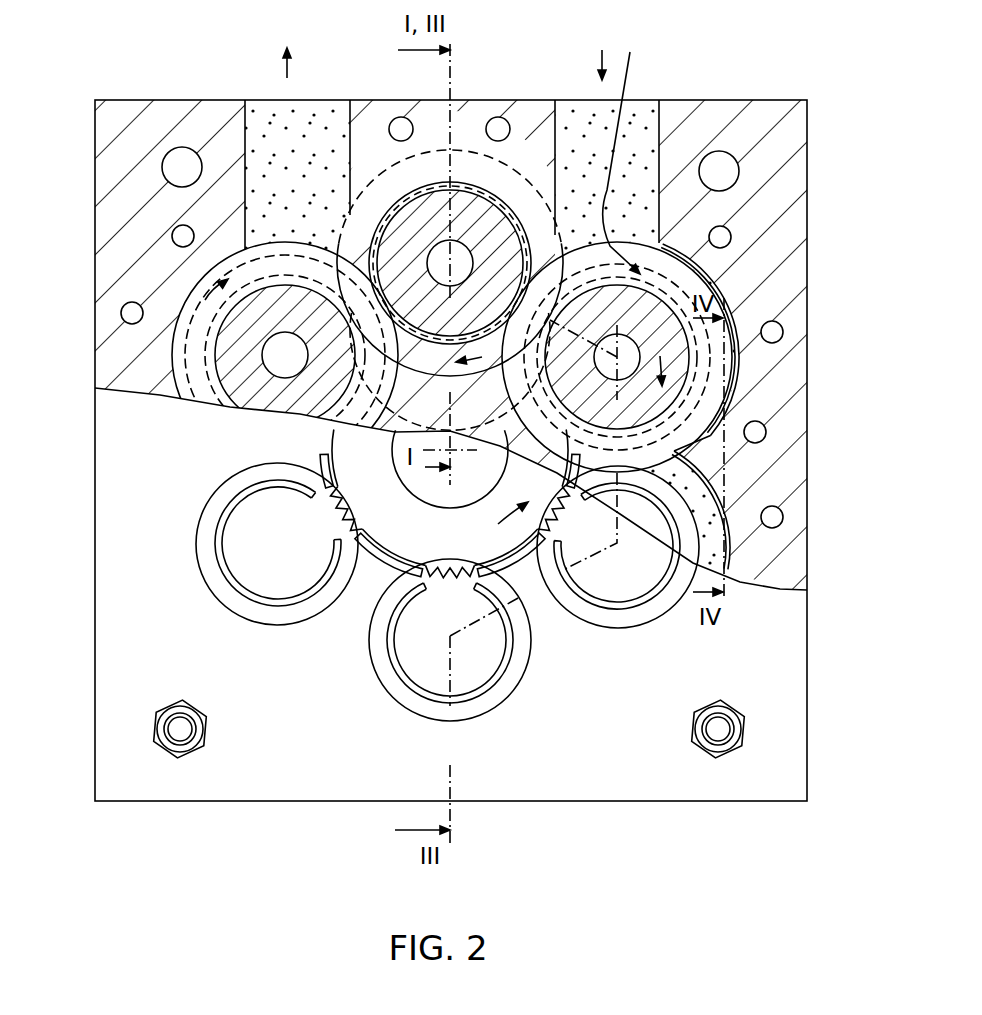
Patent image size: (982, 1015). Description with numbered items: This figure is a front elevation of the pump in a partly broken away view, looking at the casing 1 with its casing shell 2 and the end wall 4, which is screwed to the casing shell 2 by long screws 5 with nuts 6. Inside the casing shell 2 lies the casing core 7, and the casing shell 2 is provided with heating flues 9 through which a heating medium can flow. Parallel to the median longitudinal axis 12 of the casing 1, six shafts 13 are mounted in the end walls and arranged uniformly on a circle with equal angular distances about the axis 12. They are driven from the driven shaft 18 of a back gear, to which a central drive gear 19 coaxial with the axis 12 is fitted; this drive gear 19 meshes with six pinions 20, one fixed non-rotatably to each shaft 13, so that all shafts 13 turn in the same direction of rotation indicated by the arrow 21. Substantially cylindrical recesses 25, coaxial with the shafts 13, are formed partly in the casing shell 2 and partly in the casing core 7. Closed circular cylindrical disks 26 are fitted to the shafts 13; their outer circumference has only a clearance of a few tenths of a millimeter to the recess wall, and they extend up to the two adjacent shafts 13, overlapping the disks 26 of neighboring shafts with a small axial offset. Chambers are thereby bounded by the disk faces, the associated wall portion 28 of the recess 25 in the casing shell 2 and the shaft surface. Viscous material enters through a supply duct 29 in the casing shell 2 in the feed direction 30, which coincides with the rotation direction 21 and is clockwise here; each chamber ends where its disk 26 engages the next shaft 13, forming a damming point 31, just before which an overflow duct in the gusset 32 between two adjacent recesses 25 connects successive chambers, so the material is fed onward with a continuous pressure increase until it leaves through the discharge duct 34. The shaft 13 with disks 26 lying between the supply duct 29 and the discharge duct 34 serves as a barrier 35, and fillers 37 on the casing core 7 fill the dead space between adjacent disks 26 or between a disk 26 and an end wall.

The casing 1 is at (616, 806).
The casing shell 2 is at (778, 135).
The end wall 4 is at (305, 767).
The long screws 5 is at (182, 729).
The nuts 6 is at (203, 745).
The casing core 7 is at (398, 430).
The heating flues 9 is at (180, 228).
The median longitudinal axis 12 is at (452, 451).
The shafts 13 is at (487, 225).
The driven shaft 18 is at (437, 502).
The drive gear 19 is at (383, 553).
The pinions 20 is at (274, 621).
The arrow / rotation direction 21 is at (672, 372).
The recesses 25 is at (672, 387).
The disks 26 is at (277, 269).
The wall portion 28 is at (734, 320).
The supply duct 29 is at (655, 125).
The feed direction 30 is at (469, 150).
The baffle or damming point 31 is at (580, 430).
The gusset 32 is at (710, 452).
The discharge duct 34 is at (258, 118).
The barrier 35 is at (457, 160).
The fillers 37 is at (412, 363).